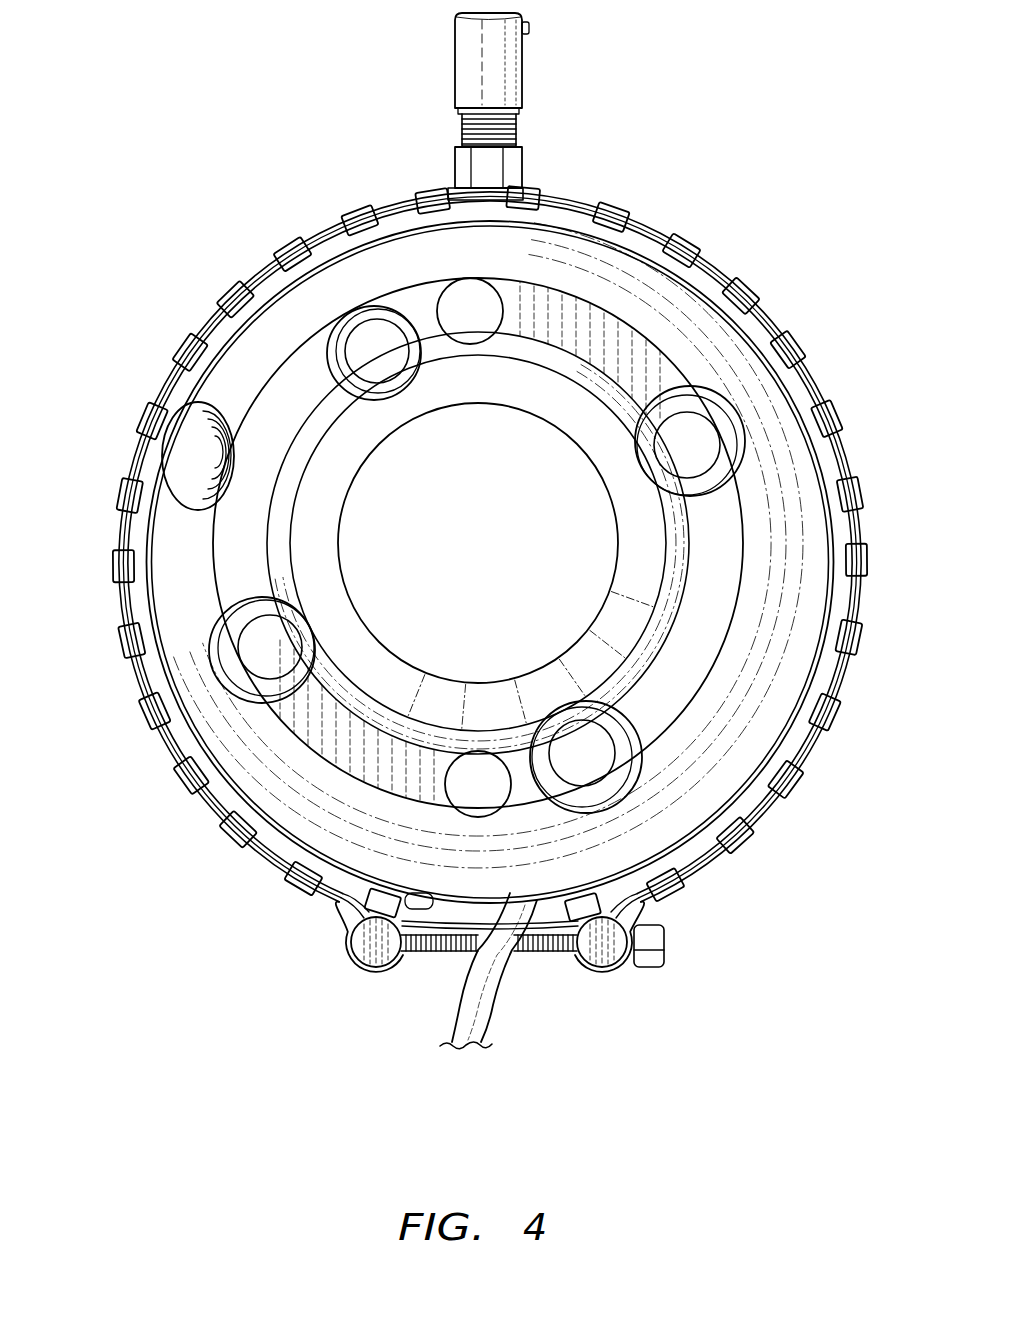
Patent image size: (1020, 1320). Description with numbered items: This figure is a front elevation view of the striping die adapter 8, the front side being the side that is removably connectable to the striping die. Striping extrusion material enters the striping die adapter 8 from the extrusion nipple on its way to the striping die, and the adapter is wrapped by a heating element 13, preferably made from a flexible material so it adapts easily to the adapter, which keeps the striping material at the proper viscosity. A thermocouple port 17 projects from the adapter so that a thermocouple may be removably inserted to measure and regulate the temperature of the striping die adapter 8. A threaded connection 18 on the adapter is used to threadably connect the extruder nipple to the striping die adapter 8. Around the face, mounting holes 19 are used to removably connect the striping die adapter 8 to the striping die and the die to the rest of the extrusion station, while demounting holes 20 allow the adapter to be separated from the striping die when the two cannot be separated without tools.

The striping die adapter 8 is at (108, 436).
The heating element 13 is at (722, 268).
The thermocouple port 17 is at (507, 74).
The threaded connection 18 is at (192, 412).
The mounting holes 19 is at (347, 337).
The demounting holes 20 is at (497, 293).